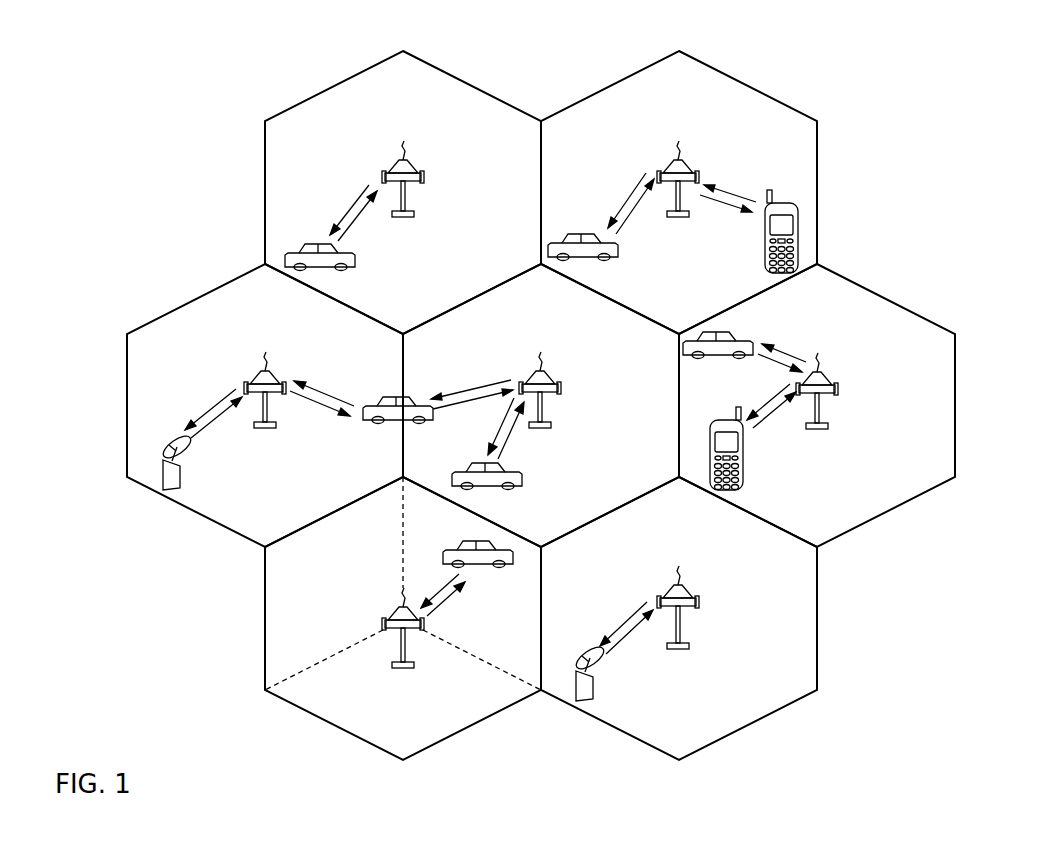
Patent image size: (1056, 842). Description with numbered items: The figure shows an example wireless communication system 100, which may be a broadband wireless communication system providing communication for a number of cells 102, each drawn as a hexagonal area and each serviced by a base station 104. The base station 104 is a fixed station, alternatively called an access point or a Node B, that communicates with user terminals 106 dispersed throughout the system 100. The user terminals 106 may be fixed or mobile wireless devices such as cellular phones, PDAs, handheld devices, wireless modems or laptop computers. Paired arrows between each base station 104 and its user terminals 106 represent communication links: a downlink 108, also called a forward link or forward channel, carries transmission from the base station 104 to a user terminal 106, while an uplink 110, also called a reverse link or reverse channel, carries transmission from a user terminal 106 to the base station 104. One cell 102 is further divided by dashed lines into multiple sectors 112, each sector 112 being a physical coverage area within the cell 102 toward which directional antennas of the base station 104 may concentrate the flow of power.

The wireless communication system 100 is at (933, 142).
The cell 102 is at (343, 80).
The base station 104 is at (665, 592).
The user terminal 106 is at (355, 266).
The downlink 108 is at (355, 217).
The uplink 110 is at (351, 210).
The sector 112 is at (452, 722).